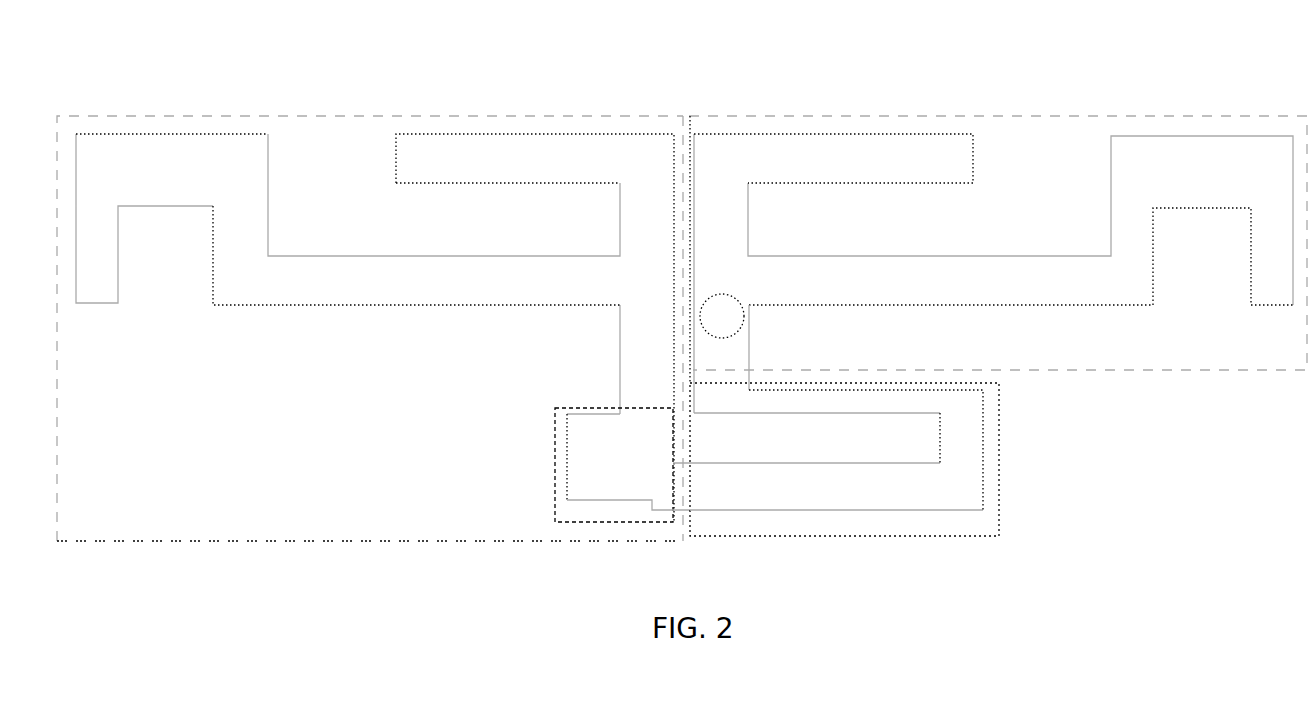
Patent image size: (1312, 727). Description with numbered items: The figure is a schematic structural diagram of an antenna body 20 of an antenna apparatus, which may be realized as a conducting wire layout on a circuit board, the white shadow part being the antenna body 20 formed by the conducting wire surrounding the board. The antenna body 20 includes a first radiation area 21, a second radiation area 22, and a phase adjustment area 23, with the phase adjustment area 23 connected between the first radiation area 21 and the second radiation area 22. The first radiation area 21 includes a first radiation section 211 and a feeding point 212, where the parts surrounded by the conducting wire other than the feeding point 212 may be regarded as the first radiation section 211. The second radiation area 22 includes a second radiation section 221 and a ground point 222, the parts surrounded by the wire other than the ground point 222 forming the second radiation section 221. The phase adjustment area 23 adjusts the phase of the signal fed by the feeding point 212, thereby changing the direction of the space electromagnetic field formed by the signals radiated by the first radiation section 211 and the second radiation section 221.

The antenna body 20 is at (684, 76).
The first radiation area 21 is at (1043, 113).
The first radiation section 211 is at (730, 223).
The feeding point 212 is at (722, 313).
The second radiation area 22 is at (363, 113).
The second radiation section 221 is at (117, 186).
The ground point 222 is at (555, 467).
The phase adjustment area 23 is at (998, 473).